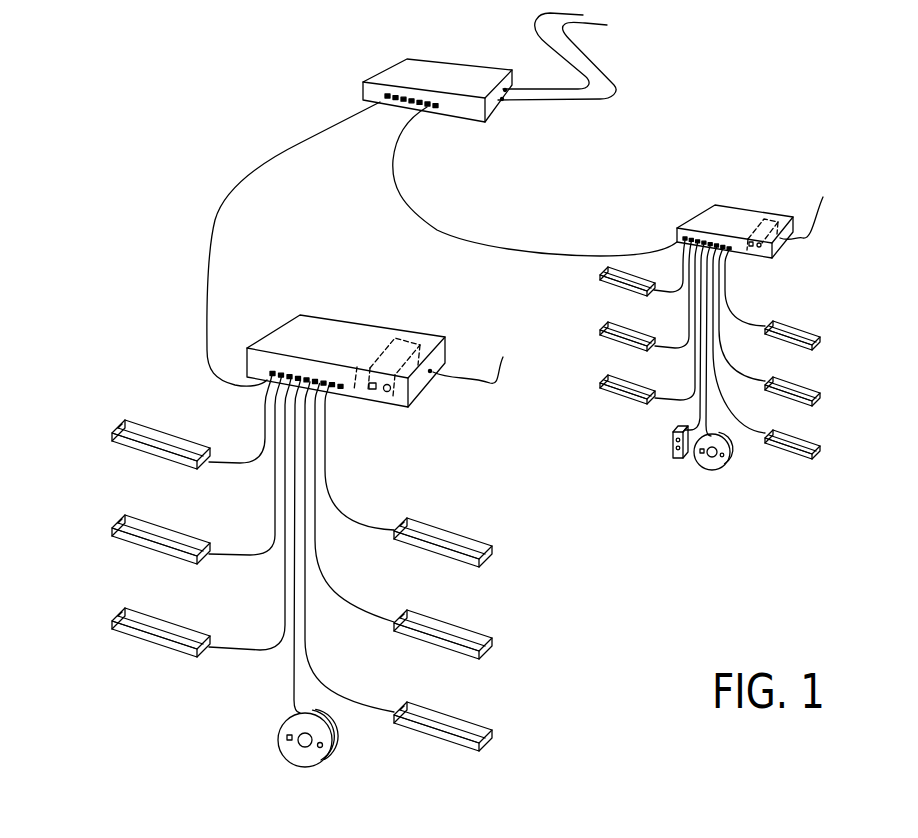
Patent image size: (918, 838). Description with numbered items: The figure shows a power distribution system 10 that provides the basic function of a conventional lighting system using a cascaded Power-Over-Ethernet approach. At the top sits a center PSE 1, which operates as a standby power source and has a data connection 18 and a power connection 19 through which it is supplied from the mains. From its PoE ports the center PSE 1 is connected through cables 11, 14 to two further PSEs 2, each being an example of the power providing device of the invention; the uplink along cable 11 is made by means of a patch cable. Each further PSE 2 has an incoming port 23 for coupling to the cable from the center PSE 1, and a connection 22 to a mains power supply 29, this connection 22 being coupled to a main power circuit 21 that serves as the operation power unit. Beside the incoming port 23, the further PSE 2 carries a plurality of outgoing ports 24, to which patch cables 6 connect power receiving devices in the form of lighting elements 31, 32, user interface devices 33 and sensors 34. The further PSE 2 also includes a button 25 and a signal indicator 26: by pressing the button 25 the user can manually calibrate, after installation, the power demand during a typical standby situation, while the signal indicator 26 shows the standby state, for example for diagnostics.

The power distribution system 10 is at (196, 121).
The center PSE 1 is at (385, 77).
The patch cable 11 is at (300, 140).
The cable 14 is at (497, 243).
The data connection 18 is at (541, 31).
The power connection 19 is at (607, 25).
The further PSE 2 is at (333, 330).
The main power circuit 21 is at (402, 338).
The connection 22 is at (430, 370).
The port 23 is at (272, 370).
The outgoing ports 24 is at (304, 355).
The button 25 is at (388, 393).
The signal indicator 26 is at (375, 391).
The mains power supply 29 is at (633, 291).
The patch cables 6 is at (262, 433).
The lighting elements 31 is at (117, 428).
The lighting elements 32 is at (115, 522).
The user interface devices 33 is at (672, 450).
The sensors 34 is at (322, 752).